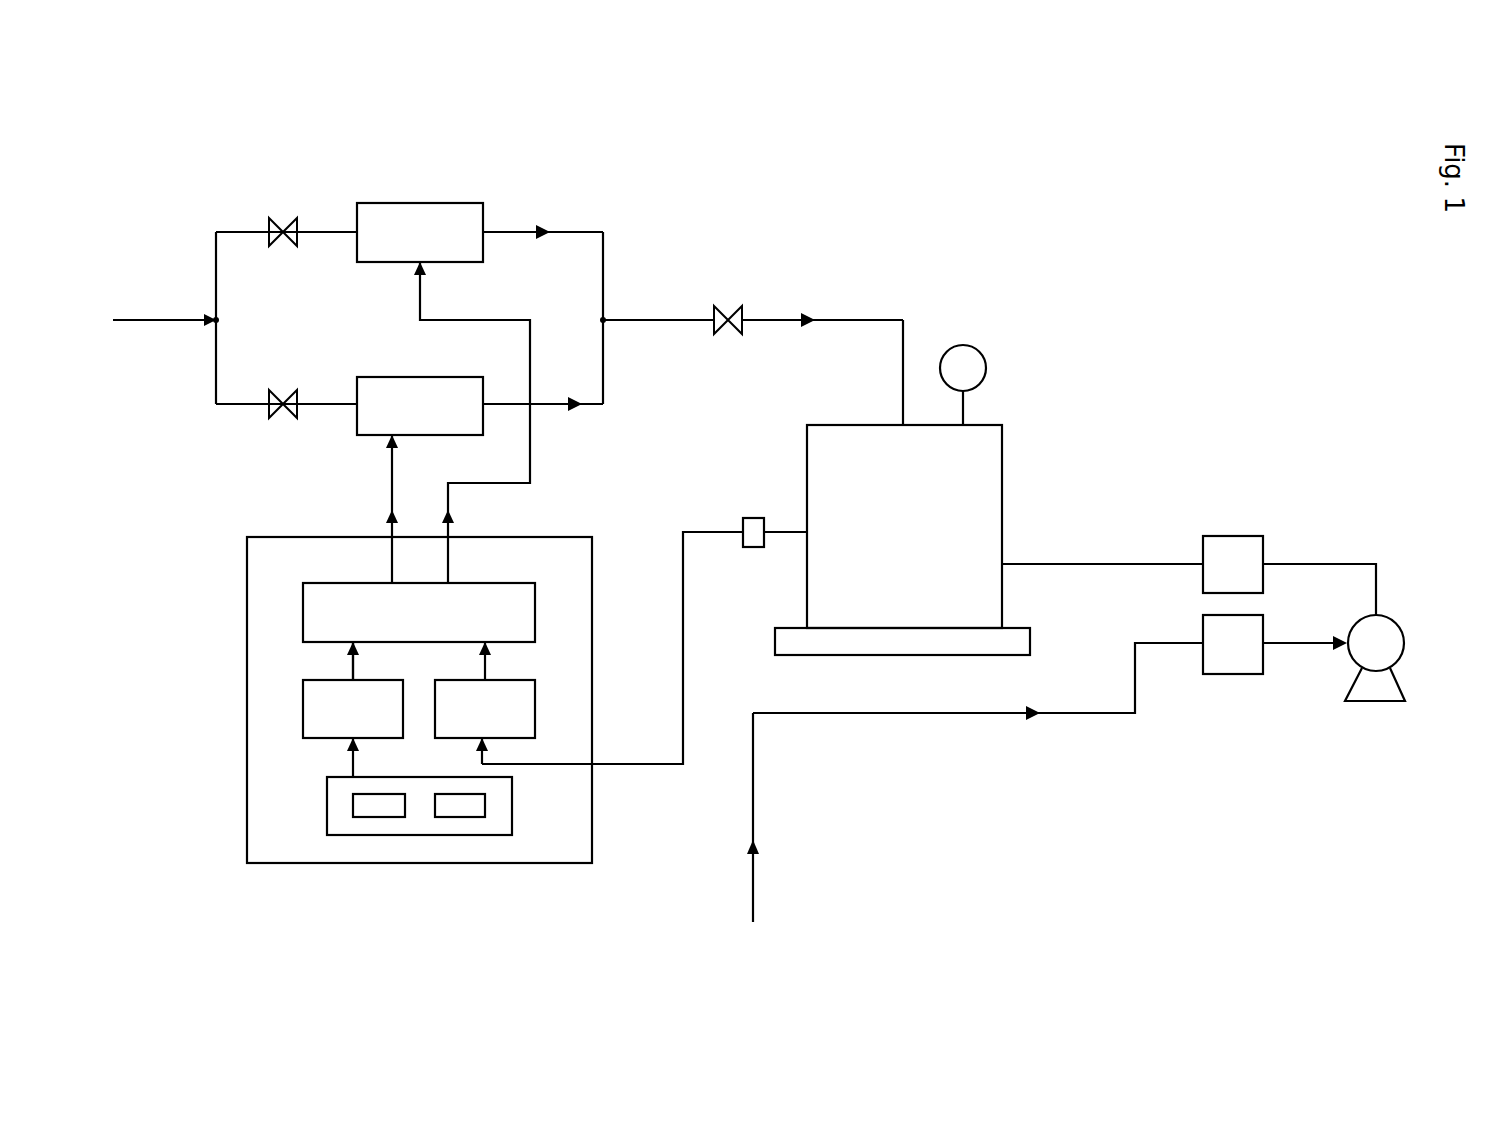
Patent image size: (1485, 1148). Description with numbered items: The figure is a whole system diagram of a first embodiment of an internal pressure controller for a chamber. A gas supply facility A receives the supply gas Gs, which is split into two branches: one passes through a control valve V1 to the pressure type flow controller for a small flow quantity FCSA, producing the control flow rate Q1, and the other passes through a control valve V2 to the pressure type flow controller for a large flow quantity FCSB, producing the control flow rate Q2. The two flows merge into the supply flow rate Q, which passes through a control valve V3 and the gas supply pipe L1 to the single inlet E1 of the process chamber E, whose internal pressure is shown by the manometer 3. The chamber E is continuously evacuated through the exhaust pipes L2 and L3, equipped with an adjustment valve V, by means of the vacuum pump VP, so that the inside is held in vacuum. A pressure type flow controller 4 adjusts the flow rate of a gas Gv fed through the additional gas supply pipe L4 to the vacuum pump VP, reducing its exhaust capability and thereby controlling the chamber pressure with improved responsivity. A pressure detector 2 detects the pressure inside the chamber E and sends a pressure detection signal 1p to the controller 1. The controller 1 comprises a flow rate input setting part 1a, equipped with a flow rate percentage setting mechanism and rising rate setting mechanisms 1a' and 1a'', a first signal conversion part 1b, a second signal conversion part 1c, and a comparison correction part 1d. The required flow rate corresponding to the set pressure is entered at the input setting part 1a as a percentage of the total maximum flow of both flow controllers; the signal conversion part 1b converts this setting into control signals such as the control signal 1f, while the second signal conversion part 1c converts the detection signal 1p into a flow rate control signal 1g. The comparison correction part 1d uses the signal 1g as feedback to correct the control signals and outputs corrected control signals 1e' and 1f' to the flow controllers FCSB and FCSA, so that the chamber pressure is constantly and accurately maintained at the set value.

The gas supply facility A is at (484, 146).
The supply gas Gs is at (164, 307).
The control valve V1 is at (283, 218).
The control valve V2 is at (283, 390).
The control valve V3 is at (728, 306).
The pressure type flow controller for a small flow quantity FCSA is at (420, 232).
The pressure type flow controller for a large flow quantity FCSB is at (420, 406).
The control flow rate of FCS(A) Q1 is at (540, 230).
The control flow rate of FCS(B) Q2 is at (571, 398).
The supply flow rate Q is at (800, 320).
The gas supply pipe L1 is at (860, 318).
The process chamber E is at (828, 462).
The single inlet of the process chamber E1 is at (903, 423).
The manometer 3 is at (980, 350).
The pressure detector 2 is at (752, 518).
The controller 1 is at (247, 655).
The flow rate input setting part 1a is at (445, 824).
The rising rate setting mechanism 1a' is at (459, 857).
The rising rate setting mechanism 1a'' is at (379, 857).
The first signal conversion part 1b is at (303, 712).
The second signal conversion part 1c is at (535, 705).
The comparison correction part 1d is at (535, 610).
The control signal 1f is at (311, 661).
The corrected control signal 1e' is at (472, 422).
The corrected control signal 1f' is at (364, 509).
The flow rate control signal 1g is at (490, 668).
The pressure detection signal 1p is at (645, 766).
The exhaust pipe L2 is at (1107, 560).
The adjustment valve V is at (1228, 535).
The exhaust pipe L3 is at (1340, 560).
The vacuum pump VP is at (1375, 658).
The pressure type flow controller 4 is at (1230, 675).
The additional gas supply pipe L4 is at (1283, 645).
The gas supplied to the vacuum pump Gv is at (757, 850).